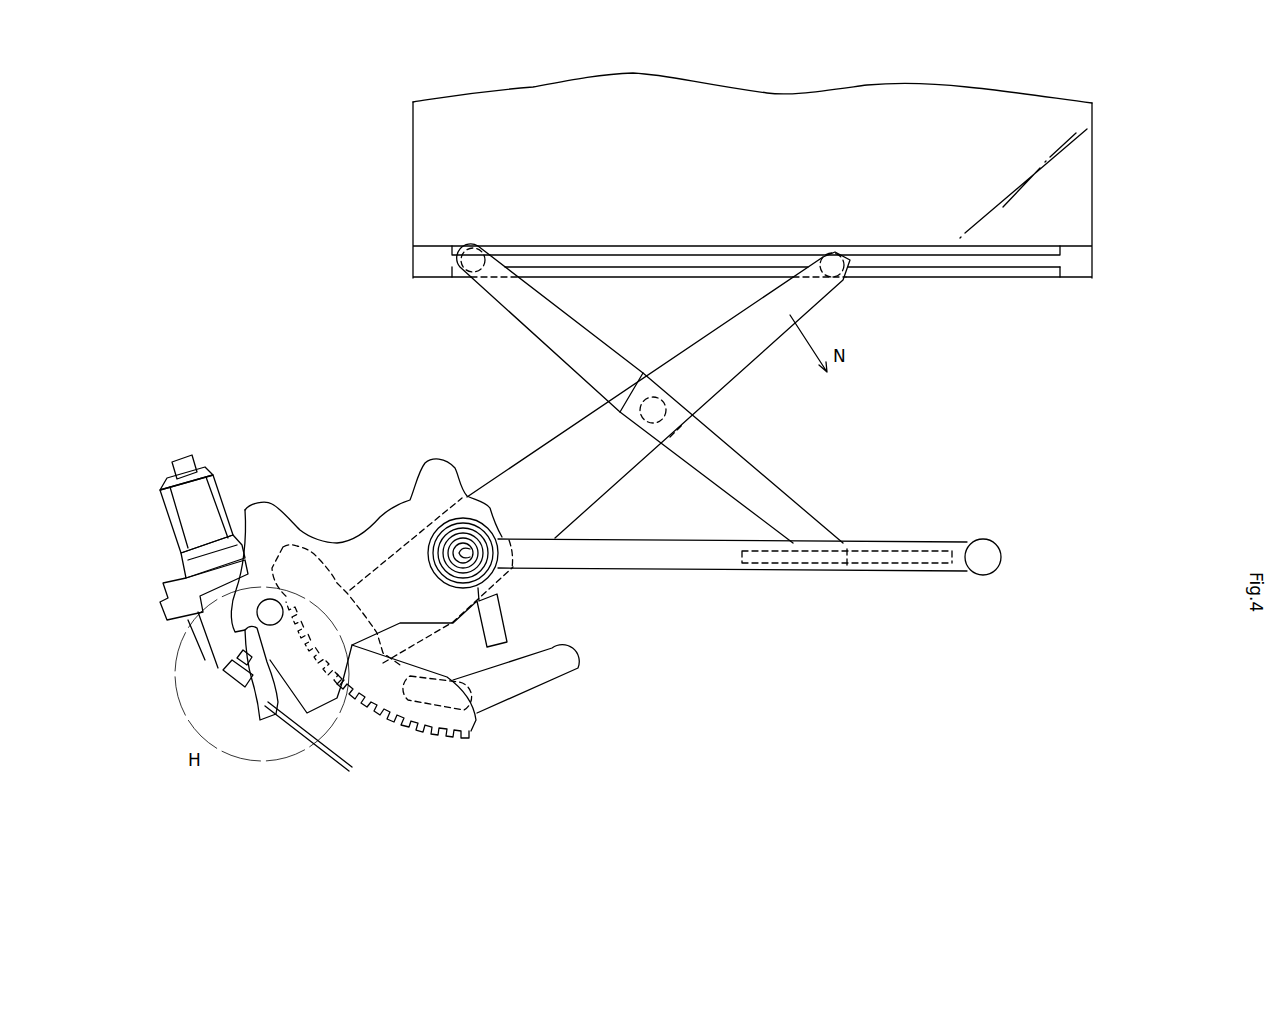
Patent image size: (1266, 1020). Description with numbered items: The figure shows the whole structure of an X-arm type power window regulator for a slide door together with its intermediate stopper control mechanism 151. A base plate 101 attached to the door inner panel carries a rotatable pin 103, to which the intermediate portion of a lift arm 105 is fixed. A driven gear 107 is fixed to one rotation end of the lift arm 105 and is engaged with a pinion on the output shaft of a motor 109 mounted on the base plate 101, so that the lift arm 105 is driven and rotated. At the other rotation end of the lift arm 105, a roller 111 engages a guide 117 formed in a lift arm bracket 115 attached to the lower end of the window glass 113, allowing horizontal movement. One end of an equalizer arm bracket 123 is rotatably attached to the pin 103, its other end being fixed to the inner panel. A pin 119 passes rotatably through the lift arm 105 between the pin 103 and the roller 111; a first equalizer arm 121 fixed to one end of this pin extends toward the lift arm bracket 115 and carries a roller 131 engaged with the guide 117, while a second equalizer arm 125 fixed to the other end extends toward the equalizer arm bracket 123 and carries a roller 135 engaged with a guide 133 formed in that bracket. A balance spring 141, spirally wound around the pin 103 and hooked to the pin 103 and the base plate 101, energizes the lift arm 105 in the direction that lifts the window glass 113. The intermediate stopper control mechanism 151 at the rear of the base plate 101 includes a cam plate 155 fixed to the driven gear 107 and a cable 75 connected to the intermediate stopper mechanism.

The cable 75 is at (327, 760).
The base plate 101 is at (355, 533).
The pin 103 is at (468, 555).
The lift arm 105 is at (817, 297).
The driven gear 107 is at (478, 723).
The motor 109 is at (207, 490).
The roller 111 is at (845, 285).
The window glass 113 is at (1075, 162).
The lift arm bracket 115 is at (1077, 255).
The guide 117 is at (958, 273).
The pin 119 is at (668, 407).
The first equalizer arm 121 is at (530, 328).
The equalizer arm bracket 123 is at (750, 557).
The second equalizer arm 125 is at (718, 437).
The roller 131 is at (475, 275).
The guide 133 is at (938, 578).
The roller 135 is at (860, 567).
The balance spring 141 is at (490, 572).
The intermediate stopper control mechanism 151 is at (273, 738).
The cam plate 155 is at (560, 672).